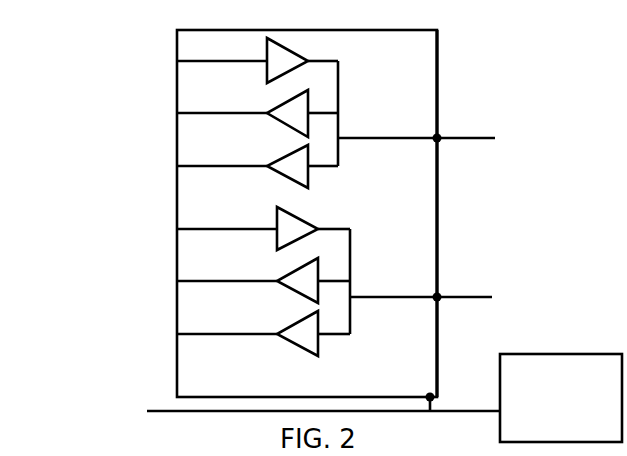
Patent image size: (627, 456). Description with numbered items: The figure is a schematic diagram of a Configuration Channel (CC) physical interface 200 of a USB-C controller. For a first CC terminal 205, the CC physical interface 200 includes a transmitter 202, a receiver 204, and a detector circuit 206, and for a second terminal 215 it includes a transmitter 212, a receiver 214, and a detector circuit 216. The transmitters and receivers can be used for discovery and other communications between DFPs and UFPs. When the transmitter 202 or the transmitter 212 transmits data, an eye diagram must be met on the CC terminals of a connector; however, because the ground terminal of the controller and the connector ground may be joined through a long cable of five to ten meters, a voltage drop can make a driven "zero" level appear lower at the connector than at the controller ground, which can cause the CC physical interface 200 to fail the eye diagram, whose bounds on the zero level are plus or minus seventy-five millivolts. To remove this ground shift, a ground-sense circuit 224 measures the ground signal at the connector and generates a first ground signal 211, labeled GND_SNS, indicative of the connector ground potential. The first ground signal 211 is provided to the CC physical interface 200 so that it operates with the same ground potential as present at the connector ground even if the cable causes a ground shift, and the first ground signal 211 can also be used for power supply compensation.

The Configuration Channel (CC) physical interface 200 is at (233, 386).
The transmitter 202 is at (300, 53).
The receiver 204 is at (308, 101).
The detector circuit 206 is at (308, 179).
The transmitter 212 is at (302, 220).
The receiver 214 is at (318, 273).
The detector circuit 216 is at (318, 345).
The first CC terminal 205 is at (440, 141).
The second terminal 215 is at (440, 300).
The first ground signal 211 is at (447, 410).
The ground-sense circuit 224 is at (576, 435).